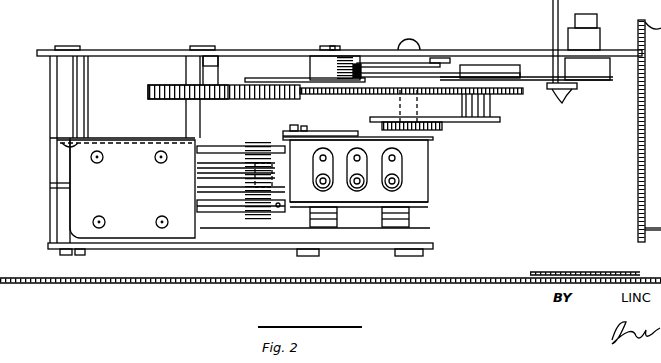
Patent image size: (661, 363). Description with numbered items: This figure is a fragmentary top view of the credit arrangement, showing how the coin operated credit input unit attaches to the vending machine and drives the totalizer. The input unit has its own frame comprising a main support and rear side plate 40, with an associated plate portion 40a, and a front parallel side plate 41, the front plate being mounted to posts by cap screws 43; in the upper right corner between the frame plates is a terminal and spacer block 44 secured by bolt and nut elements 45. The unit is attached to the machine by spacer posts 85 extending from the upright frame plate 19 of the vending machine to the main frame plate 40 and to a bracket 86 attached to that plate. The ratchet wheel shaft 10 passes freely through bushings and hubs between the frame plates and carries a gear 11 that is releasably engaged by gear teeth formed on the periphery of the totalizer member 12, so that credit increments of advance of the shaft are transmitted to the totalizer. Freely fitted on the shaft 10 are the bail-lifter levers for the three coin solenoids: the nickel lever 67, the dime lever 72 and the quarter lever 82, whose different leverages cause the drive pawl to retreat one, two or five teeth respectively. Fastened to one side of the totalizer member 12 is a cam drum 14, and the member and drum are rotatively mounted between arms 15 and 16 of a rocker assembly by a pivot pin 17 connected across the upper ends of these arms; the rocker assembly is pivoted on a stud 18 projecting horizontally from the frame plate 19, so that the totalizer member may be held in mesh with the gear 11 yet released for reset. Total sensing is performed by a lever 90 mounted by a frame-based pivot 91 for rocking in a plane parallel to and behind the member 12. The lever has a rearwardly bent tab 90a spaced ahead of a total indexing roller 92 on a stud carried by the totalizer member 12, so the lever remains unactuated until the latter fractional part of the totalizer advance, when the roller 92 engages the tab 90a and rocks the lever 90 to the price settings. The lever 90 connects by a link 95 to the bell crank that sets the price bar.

The ratchet wheel shaft 10 is at (232, 84).
The gear 11 is at (276, 85).
The totalizer member 12 is at (306, 85).
The cam drum 14 is at (488, 118).
The arm 15 is at (439, 130).
The arm 16 is at (428, 56).
The pivot pin 17 is at (405, 74).
The stud 18 is at (402, 46).
The upright frame plate 19 is at (114, 50).
The main support and rear side plate 40 is at (200, 128).
The side plate 40a is at (126, 150).
The front side plate 41 is at (193, 249).
The cap screws 43 is at (83, 255).
The terminal and spacer block 44 is at (428, 187).
The bolt and nut elements 45 is at (395, 254).
The lever 67 is at (197, 168).
The lever 72 is at (197, 187).
The lever 82 is at (205, 201).
The spacer posts 85 is at (186, 70).
The bracket 86 is at (326, 130).
The total credit sensing lever 90 is at (537, 83).
The rearwardly bent tab 90a is at (505, 64).
The frame-based pivot 91 is at (338, 46).
The total indexing roller 92 is at (358, 65).
The link 95 is at (575, 93).